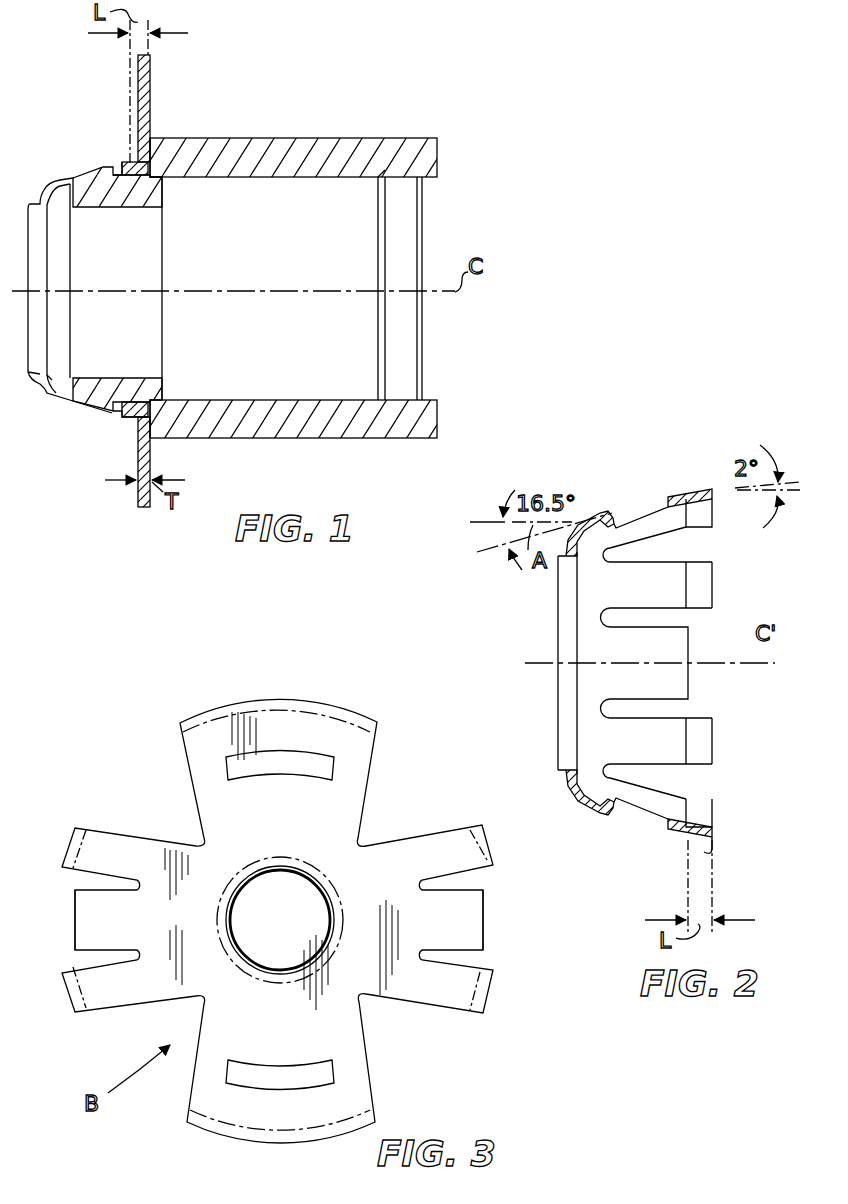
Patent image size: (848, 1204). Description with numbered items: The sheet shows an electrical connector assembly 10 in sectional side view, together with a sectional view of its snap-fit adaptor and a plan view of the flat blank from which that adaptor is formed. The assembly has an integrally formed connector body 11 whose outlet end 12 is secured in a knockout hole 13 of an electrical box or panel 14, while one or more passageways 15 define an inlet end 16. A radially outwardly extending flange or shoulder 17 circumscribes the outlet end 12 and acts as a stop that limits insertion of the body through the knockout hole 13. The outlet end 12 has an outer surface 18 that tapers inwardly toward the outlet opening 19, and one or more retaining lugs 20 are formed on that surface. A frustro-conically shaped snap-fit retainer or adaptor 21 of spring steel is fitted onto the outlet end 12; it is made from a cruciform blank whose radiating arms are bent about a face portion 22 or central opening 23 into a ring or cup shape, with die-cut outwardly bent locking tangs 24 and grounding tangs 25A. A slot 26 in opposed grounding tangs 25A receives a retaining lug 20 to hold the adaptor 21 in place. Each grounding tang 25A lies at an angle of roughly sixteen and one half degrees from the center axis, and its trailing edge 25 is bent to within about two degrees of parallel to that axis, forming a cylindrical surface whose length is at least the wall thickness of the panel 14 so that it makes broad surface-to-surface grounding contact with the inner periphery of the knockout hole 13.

In FIG. 1, the electrical connector assembly 10 is at (314, 120).
In FIG. 1, the connector body 11 is at (356, 433).
In FIG. 1, the outlet end 12 is at (112, 418).
In FIG. 1, the knockout hole 13 is at (138, 418).
In FIG. 1, the electrical box or panel 14 is at (152, 98).
In FIG. 1, the passageway 15 is at (272, 410).
In FIG. 1, the inlet end 16 is at (405, 380).
In FIG. 1, the flange or shoulder 17 is at (165, 400).
In FIG. 1, the outer surface 18 is at (118, 207).
In FIG. 1, the outlet opening 19 is at (82, 353).
In FIG. 1, the retaining lug 20 is at (76, 365).
In FIG. 1, the snap-fit retainer or adaptor 21 is at (56, 180).
In FIG. 2, the snap-fit retainer or adaptor 21 is at (606, 500).
In FIG. 2, the face portion 22 is at (573, 792).
In FIG. 3, the face portion 22 is at (306, 862).
In FIG. 2, the central opening 23 is at (562, 716).
In FIG. 3, the central opening 23 is at (312, 905).
In FIG. 2, the locking tang 24 is at (690, 648).
In FIG. 3, the locking tang 24 is at (75, 913).
In FIG. 1, the trailing edge 25 is at (146, 162).
In FIG. 2, the trailing edge 25 is at (705, 490).
In FIG. 3, the trailing edge 25 is at (284, 702).
In FIG. 3, the grounding tang 25A is at (105, 855).
In FIG. 2, the slot 26 is at (638, 810).
In FIG. 3, the slot 26 is at (272, 765).